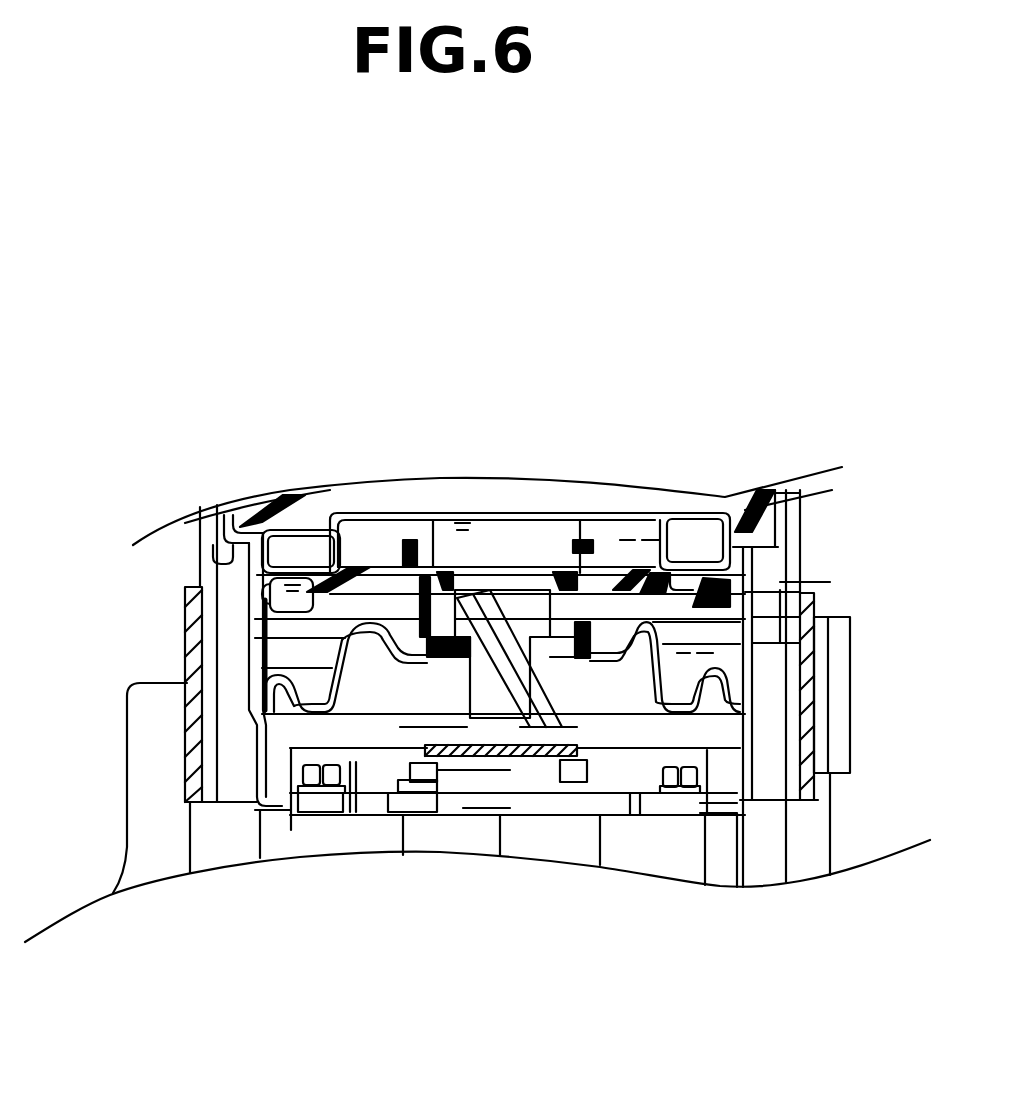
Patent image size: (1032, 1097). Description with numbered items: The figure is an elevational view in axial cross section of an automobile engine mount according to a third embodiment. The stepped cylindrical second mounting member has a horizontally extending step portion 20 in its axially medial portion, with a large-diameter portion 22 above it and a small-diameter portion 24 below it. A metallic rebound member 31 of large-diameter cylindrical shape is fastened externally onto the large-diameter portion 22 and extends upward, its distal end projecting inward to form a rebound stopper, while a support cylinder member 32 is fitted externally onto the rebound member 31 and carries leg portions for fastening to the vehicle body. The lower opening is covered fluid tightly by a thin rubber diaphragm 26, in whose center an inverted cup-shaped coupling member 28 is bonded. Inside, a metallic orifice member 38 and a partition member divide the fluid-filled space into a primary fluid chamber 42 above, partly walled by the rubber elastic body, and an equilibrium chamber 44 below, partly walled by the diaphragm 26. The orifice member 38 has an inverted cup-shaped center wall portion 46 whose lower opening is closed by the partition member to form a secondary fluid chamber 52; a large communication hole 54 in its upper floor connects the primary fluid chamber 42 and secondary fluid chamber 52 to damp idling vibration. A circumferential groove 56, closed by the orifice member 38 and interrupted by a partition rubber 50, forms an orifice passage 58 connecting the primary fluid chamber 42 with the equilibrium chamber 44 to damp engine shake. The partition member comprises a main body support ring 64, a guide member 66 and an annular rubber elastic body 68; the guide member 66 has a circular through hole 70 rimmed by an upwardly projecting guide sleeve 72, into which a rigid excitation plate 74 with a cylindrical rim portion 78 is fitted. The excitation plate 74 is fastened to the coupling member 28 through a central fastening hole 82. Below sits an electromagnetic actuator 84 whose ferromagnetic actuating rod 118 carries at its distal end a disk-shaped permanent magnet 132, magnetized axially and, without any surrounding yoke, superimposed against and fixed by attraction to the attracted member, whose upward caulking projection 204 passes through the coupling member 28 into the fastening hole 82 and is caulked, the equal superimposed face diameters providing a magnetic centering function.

The step portion 20 is at (200, 562).
The large-diameter portion 22 is at (501, 506).
The small-diameter portion 24 is at (753, 702).
The diaphragm 26 is at (503, 668).
The coupling member 28 is at (553, 598).
The rebound member 31 is at (790, 562).
The support cylinder member 32 is at (200, 768).
The orifice member 38 is at (461, 498).
The primary fluid chamber 42 is at (686, 513).
The equilibrium chamber 44 is at (265, 678).
The center wall portion 46 is at (668, 540).
The partition rubber 50 is at (817, 583).
The secondary fluid chamber 52 is at (330, 548).
The communication hole 54 is at (373, 512).
The circumferential groove 56 is at (268, 590).
The orifice passage 58 is at (255, 642).
The main body support ring 64 is at (850, 617).
The guide member 66 is at (400, 585).
The annular rubber elastic body 68 is at (648, 572).
The through hole 70 is at (430, 518).
The guide sleeve 72 is at (605, 538).
The excitation plate 74 is at (537, 530).
The rim portion 78 is at (577, 530).
The fastening hole 82 is at (508, 570).
The electromagnetic actuator 84 is at (632, 898).
The actuating rod 118 is at (503, 803).
The permanent magnet 132 is at (487, 757).
The caulking projection 204 is at (498, 570).